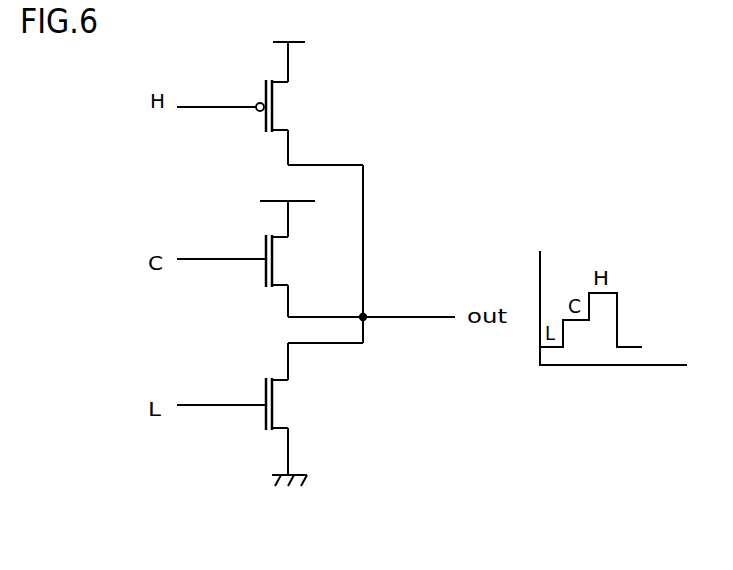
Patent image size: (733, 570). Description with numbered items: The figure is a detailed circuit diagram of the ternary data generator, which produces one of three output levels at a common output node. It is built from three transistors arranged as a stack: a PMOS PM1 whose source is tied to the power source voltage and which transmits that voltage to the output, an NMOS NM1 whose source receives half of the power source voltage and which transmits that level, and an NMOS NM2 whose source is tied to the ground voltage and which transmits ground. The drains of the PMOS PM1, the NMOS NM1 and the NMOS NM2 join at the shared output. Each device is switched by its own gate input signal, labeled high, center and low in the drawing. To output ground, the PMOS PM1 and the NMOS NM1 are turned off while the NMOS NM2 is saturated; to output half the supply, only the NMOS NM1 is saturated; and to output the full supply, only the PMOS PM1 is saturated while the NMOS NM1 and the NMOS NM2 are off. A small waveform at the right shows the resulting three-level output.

The PMOS PM1 is at (295, 89).
The NMOS NM1 is at (296, 245).
The NMOS NM2 is at (310, 430).